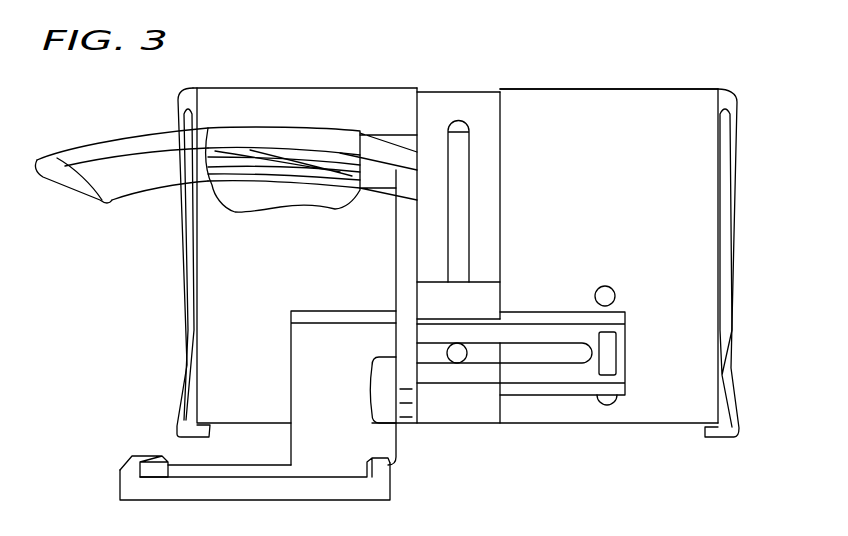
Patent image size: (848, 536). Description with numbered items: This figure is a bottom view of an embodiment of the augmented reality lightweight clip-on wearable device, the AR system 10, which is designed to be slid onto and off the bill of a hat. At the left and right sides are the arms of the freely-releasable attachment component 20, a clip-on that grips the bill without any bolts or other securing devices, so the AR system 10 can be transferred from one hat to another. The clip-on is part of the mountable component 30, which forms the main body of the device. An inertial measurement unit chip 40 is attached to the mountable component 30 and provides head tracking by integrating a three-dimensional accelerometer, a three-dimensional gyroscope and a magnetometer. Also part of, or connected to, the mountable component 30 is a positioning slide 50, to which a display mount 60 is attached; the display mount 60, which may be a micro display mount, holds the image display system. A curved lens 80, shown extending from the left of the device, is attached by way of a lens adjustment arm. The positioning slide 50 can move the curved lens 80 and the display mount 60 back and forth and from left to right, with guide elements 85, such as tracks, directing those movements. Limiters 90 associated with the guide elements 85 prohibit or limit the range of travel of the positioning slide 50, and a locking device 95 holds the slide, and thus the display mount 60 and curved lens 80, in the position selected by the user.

The AR system 10 is at (717, 62).
The attachment component 20 is at (738, 198).
The mountable component 30 is at (587, 88).
The inertial measurement unit chip 40 is at (610, 423).
The positioning slide 50 is at (457, 298).
The display mount 60 is at (268, 463).
The curved lens 80 is at (127, 200).
The guide elements 85 is at (457, 153).
The limiters 90 is at (605, 286).
The locking device 95 is at (618, 351).